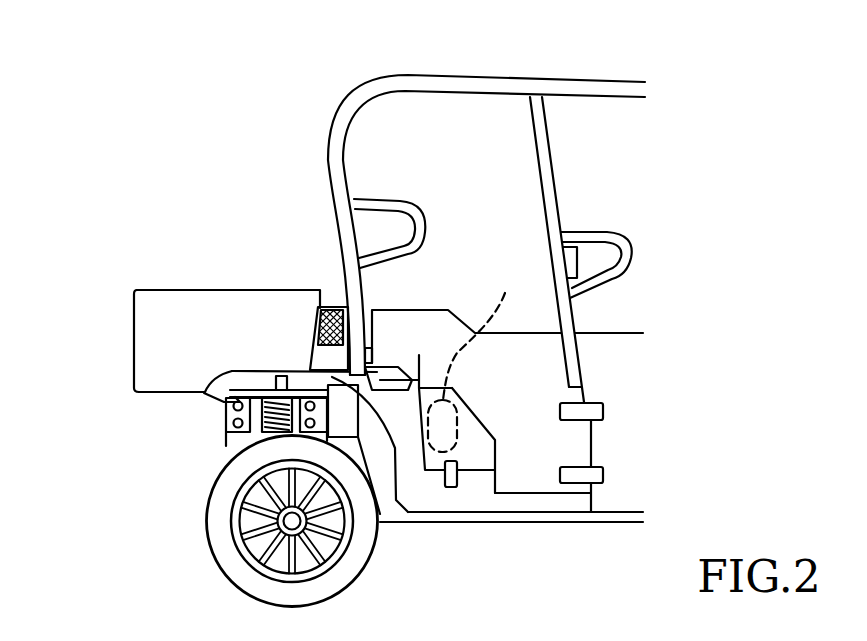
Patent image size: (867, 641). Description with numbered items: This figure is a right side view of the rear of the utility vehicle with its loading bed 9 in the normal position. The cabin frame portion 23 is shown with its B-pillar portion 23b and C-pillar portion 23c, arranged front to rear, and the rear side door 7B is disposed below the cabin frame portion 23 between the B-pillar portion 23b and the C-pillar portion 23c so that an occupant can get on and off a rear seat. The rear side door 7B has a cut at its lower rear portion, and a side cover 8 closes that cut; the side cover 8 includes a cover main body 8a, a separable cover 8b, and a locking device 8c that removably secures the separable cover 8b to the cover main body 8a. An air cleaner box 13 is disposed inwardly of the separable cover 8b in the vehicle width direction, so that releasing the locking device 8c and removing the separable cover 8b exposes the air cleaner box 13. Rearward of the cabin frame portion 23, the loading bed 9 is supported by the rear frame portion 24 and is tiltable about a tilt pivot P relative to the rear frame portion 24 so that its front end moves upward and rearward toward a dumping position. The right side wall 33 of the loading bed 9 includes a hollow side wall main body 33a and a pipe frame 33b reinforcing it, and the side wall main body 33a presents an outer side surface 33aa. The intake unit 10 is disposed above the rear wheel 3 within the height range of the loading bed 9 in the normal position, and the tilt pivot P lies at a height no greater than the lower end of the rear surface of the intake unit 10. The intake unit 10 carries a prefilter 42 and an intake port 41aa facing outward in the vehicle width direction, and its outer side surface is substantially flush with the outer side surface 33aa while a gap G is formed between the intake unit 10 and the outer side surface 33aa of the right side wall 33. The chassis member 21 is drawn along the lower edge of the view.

The cabin frame portion 23 is at (462, 73).
The C-pillar portion 23c is at (345, 163).
The B-pillar portion 23b is at (553, 173).
The intake unit 10 is at (351, 322).
The air cleaner box 13 is at (474, 357).
The loading bed 9 is at (172, 294).
The right side wall 33 is at (172, 310).
The pipe frame 33b is at (175, 291).
The outer side surface 33aa is at (146, 353).
The side wall main body 33a is at (145, 373).
The gap G is at (307, 358).
The prefilter 42 is at (312, 337).
The intake port 41aa is at (336, 311).
The tilt pivot P is at (208, 393).
The rear frame portion 24 is at (260, 402).
The rear wheel 3 is at (213, 540).
The cover main body 8a is at (412, 497).
The side cover 8 is at (433, 507).
The locking device 8c is at (450, 487).
The separable cover 8b is at (478, 467).
The rear side door 7B is at (540, 488).
The chassis frame 21 is at (615, 523).